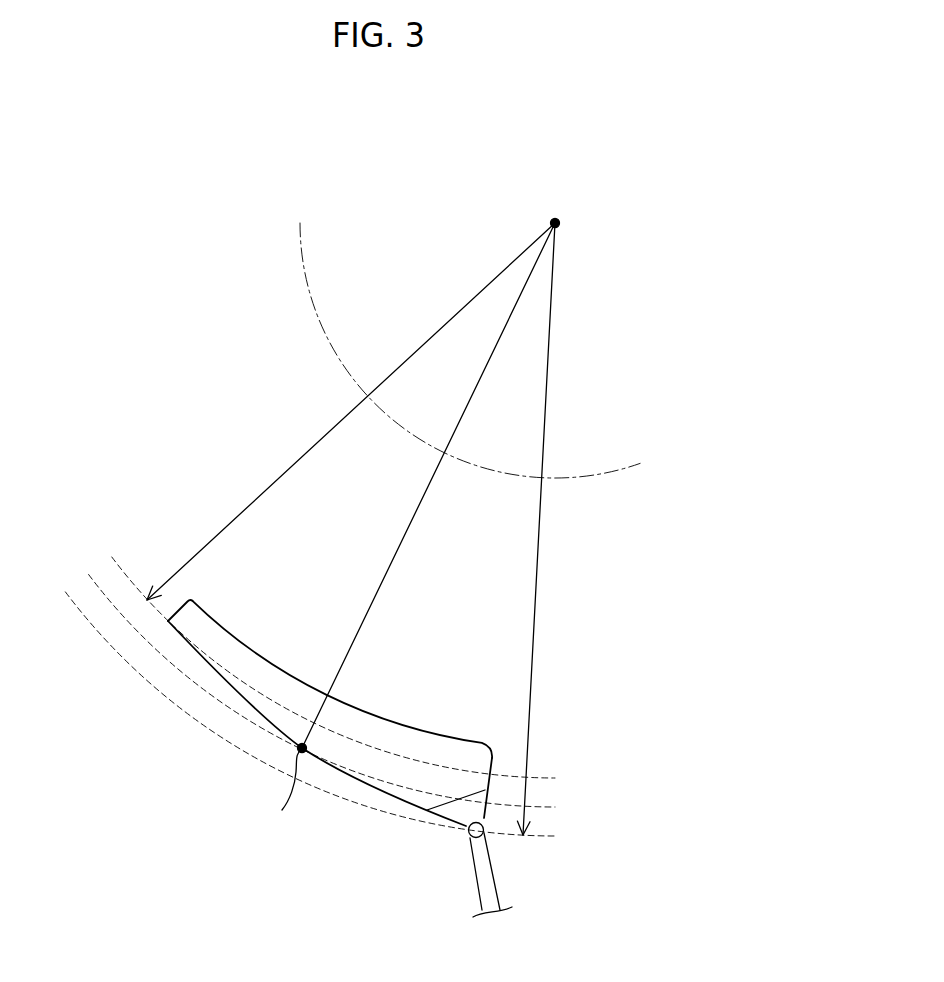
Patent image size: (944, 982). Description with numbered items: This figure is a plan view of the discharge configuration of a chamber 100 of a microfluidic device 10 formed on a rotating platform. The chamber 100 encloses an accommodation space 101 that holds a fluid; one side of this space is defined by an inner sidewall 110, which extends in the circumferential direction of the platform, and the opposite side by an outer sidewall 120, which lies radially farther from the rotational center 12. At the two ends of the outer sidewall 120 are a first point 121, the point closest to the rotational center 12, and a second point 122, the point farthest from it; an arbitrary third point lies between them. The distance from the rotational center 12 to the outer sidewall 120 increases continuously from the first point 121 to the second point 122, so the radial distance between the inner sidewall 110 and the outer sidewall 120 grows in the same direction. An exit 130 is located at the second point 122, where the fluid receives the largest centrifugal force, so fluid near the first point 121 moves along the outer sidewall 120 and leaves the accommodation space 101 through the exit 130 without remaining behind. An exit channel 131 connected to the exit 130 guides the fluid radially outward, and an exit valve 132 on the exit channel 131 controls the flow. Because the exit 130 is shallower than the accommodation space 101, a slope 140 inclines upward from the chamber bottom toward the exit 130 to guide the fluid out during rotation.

The fan assembly 10 is at (283, 901).
The rotational center 12 is at (557, 218).
The chamber 100 is at (238, 760).
The accommodation space 101 is at (235, 660).
The inner sidewall 110 is at (273, 658).
The outer sidewall 120 is at (357, 784).
The first point 121 is at (168, 621).
The second point 122 is at (468, 833).
The exit 130 is at (473, 820).
The exit channel 131 is at (477, 882).
The exit valve 132 is at (490, 842).
The slope 140 is at (447, 808).